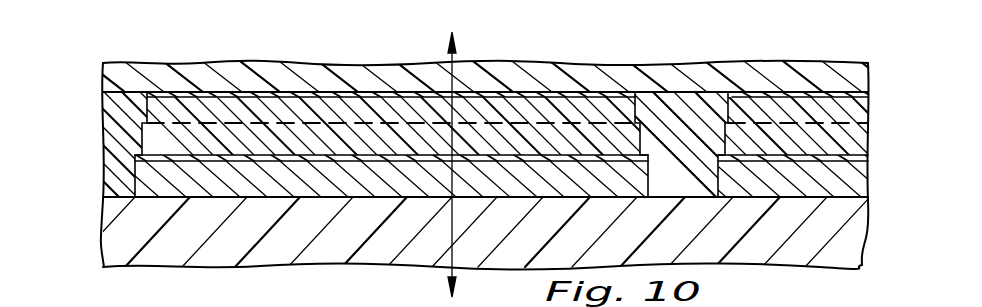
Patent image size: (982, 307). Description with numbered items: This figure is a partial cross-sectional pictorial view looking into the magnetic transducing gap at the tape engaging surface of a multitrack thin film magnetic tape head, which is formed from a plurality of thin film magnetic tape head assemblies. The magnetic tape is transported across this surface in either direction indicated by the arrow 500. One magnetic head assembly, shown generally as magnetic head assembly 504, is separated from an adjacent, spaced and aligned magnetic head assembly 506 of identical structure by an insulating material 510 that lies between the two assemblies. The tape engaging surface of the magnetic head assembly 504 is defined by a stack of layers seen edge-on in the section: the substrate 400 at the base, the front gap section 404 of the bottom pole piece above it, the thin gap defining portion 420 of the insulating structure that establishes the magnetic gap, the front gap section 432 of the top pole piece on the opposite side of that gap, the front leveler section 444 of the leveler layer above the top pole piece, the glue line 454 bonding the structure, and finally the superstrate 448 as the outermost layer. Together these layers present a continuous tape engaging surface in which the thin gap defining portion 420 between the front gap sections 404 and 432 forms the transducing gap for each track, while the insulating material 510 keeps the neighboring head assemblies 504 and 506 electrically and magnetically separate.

The substrate 400 is at (120, 240).
The front gap section of the bottom pole piece 404 is at (147, 187).
The thin gap defining portion of the insulating structure 420 is at (147, 163).
The front gap section of the top pole piece 432 is at (150, 138).
The front leveler section of the leveler layer 444 is at (157, 110).
The superstrate 448 is at (153, 61).
The glue line 454 is at (160, 91).
The arrow 500 is at (458, 53).
The magnetic head assembly 504 is at (210, 63).
The adjacent magnetic head assembly 506 is at (758, 60).
The insulating material 510 is at (630, 62).